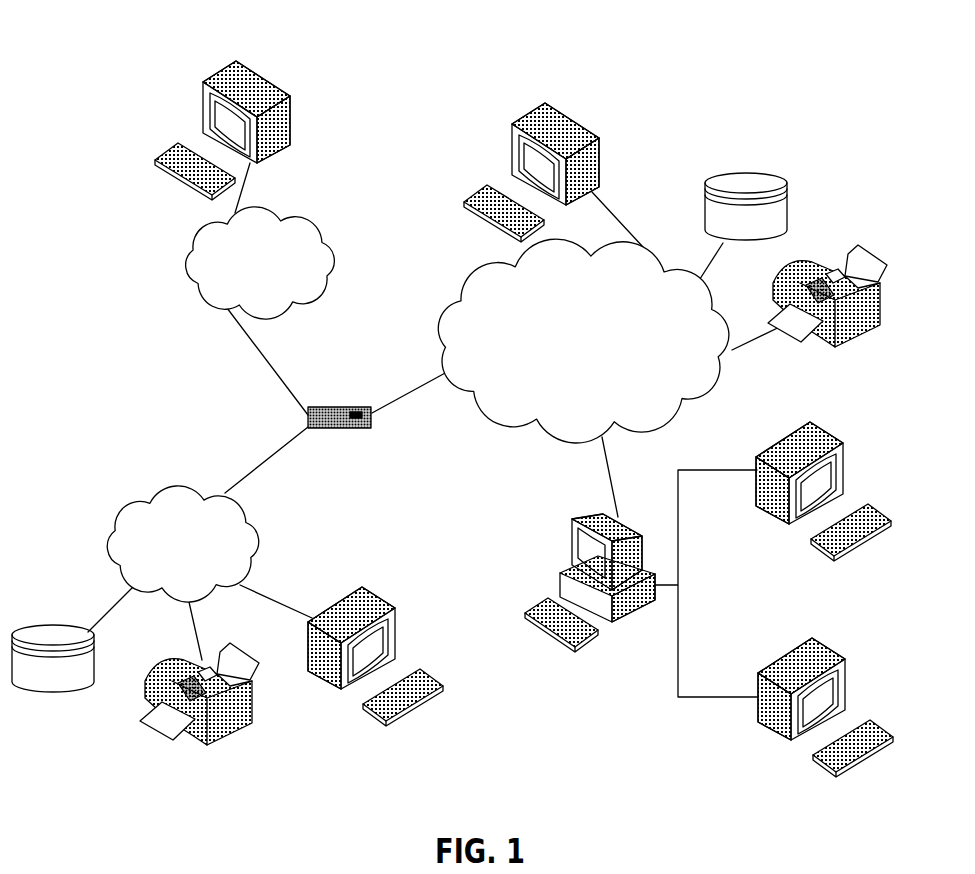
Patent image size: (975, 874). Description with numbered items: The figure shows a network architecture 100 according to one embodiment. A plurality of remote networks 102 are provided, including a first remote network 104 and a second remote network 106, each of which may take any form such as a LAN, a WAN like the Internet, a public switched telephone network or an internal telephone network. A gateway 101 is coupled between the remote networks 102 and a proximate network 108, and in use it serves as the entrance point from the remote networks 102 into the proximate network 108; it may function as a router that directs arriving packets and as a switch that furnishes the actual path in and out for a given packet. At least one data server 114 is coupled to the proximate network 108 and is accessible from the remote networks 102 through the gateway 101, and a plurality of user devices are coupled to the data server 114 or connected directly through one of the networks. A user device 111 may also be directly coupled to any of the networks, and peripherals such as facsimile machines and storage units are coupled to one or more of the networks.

The architecture 100 is at (136, 45).
The gateway 101 is at (322, 407).
The remote networks 102 is at (158, 330).
The first remote network 104 is at (113, 518).
The second remote network 106 is at (330, 236).
The proximate network 108 is at (692, 411).
The user device 111 is at (600, 137).
The data server 114 is at (573, 538).